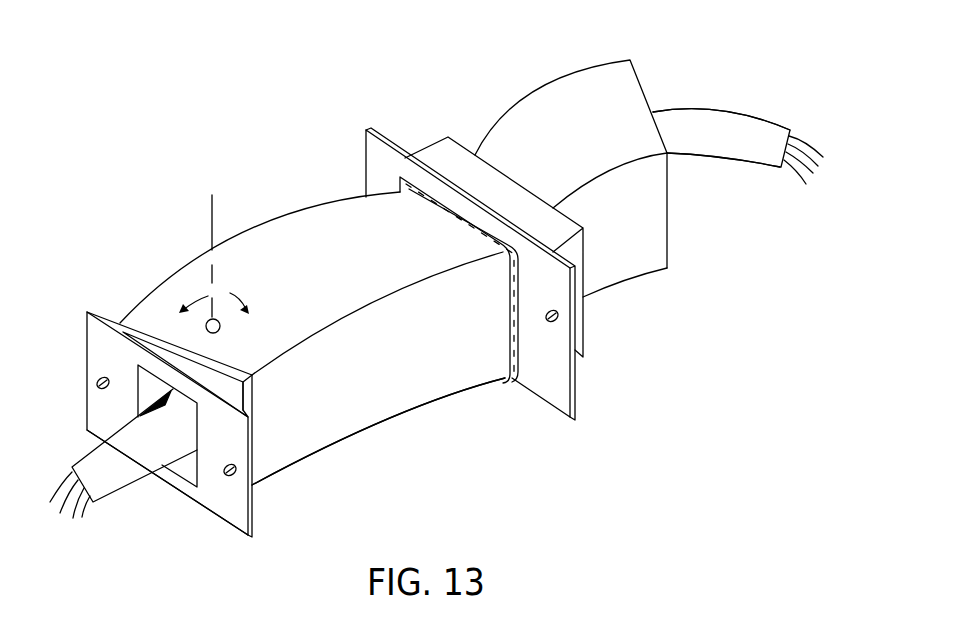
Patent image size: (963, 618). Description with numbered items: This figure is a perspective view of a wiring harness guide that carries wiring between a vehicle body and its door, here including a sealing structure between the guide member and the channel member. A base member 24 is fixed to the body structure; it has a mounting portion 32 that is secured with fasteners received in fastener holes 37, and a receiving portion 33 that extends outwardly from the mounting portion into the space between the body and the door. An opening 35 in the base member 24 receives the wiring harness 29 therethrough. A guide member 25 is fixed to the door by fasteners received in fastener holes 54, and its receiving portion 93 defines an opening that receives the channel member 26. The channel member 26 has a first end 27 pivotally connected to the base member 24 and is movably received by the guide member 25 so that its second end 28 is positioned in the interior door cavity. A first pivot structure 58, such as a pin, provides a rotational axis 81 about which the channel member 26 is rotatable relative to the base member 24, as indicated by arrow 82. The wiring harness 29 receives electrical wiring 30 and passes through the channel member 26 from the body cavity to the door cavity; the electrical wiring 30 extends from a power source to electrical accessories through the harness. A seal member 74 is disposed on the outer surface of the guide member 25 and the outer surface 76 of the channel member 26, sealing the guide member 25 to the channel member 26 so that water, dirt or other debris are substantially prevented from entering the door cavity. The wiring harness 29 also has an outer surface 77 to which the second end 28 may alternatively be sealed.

The base member 24 is at (79, 341).
The guide member 25 is at (392, 133).
The channel member 26 is at (287, 202).
The first end 27 is at (227, 363).
The second end 28 is at (642, 83).
The wiring harness 29 is at (79, 448).
The electrical wiring 30 is at (83, 512).
The mounting portion 32 is at (200, 510).
The receiving portion 33 is at (227, 388).
The opening 35 is at (173, 472).
The fastener holes 37 is at (225, 463).
The fastener holes 54 is at (552, 321).
The first pivot structure 58 is at (221, 327).
The seal member 74 is at (512, 302).
The outer surface 76 is at (470, 353).
The outer surface 77 is at (712, 138).
The rotational axis 81 is at (212, 211).
The arrow 82 is at (231, 294).
The receiving portion 93 is at (458, 138).